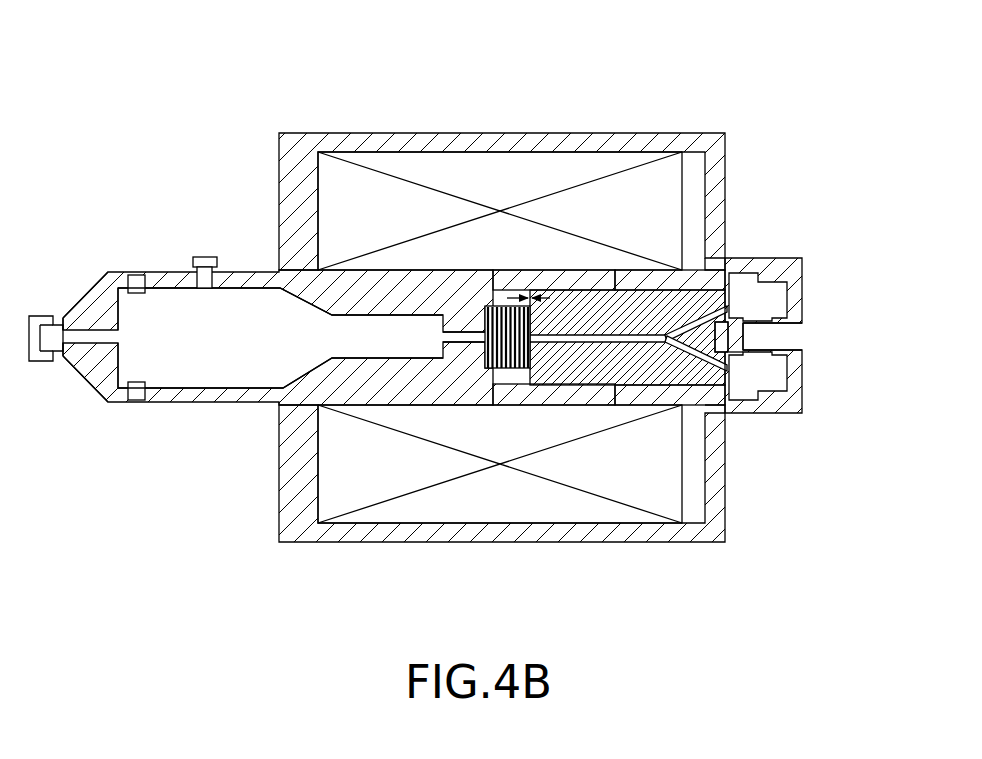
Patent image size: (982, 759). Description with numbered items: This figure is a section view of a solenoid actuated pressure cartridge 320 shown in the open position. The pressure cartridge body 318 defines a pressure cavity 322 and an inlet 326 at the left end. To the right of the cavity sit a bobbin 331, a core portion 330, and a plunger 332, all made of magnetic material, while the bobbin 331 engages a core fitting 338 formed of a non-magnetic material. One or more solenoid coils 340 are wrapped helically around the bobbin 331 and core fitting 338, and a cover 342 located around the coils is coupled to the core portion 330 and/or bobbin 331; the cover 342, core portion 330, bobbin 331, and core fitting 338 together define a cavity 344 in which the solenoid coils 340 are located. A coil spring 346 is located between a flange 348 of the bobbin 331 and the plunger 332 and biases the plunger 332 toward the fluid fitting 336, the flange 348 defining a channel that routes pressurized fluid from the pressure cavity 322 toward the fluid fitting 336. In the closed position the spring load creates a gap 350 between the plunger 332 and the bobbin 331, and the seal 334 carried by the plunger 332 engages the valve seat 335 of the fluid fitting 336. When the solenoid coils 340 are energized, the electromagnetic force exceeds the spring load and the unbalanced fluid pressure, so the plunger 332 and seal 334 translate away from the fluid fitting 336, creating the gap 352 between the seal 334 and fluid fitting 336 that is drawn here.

The pressure cartridge 320 is at (200, 128).
The cover 342 is at (367, 133).
The core fitting 338 is at (540, 280).
The plunger 332 is at (643, 300).
The core portion 330 is at (665, 282).
The seal 334 is at (740, 308).
The valve seat 335 is at (753, 337).
The gap 352 is at (737, 364).
The fluid fitting 336 is at (788, 405).
The cavity 344 is at (365, 512).
The solenoid coil 340 is at (497, 507).
The spring 346 is at (520, 370).
The flange 348 is at (457, 342).
The gap 350 is at (498, 296).
The bobbin 331 is at (362, 288).
The pressure cartridge body 318 is at (157, 273).
The inlet 326 is at (82, 330).
The pressure cavity 322 is at (222, 349).